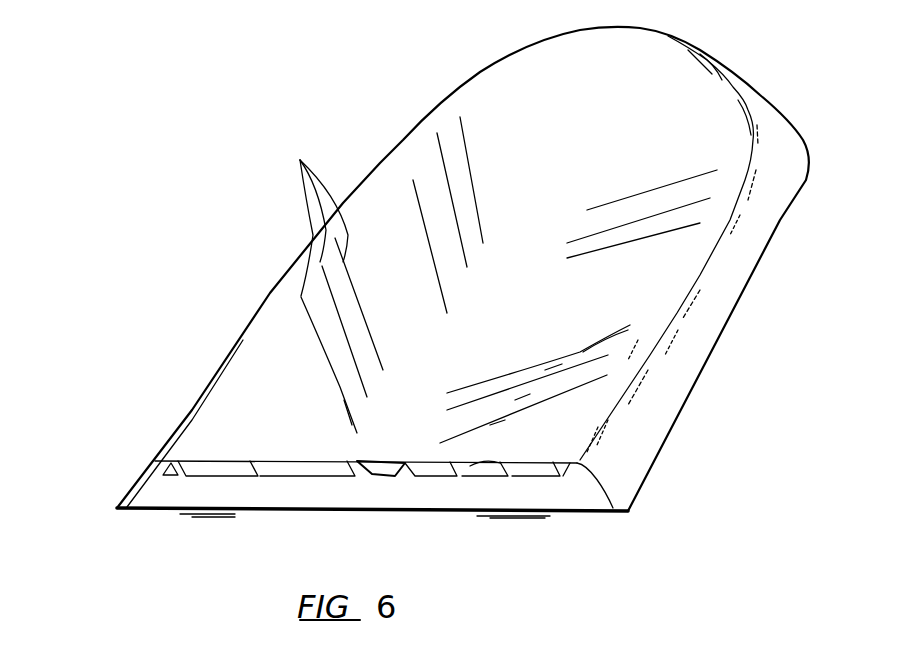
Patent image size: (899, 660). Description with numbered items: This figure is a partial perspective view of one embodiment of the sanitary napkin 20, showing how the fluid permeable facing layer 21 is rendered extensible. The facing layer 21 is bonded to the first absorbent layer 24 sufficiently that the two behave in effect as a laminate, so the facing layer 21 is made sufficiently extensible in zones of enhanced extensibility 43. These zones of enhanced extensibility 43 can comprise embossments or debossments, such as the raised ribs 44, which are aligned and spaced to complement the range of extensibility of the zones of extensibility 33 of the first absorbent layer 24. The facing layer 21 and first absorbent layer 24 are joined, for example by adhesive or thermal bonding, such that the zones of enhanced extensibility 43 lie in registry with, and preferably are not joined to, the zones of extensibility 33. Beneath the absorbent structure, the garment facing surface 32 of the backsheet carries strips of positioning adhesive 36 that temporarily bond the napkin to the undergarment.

The sanitary napkin 20 is at (237, 97).
The fluid permeable facing layer 21 is at (218, 460).
The first absorbent layer 24 is at (207, 480).
The garment facing surface 32 is at (143, 511).
The zones of extensibility 33 is at (505, 462).
The positioning adhesive 36 is at (200, 520).
The zones of enhanced extensibility 43 is at (450, 147).
The raised ribs 44 is at (314, 284).